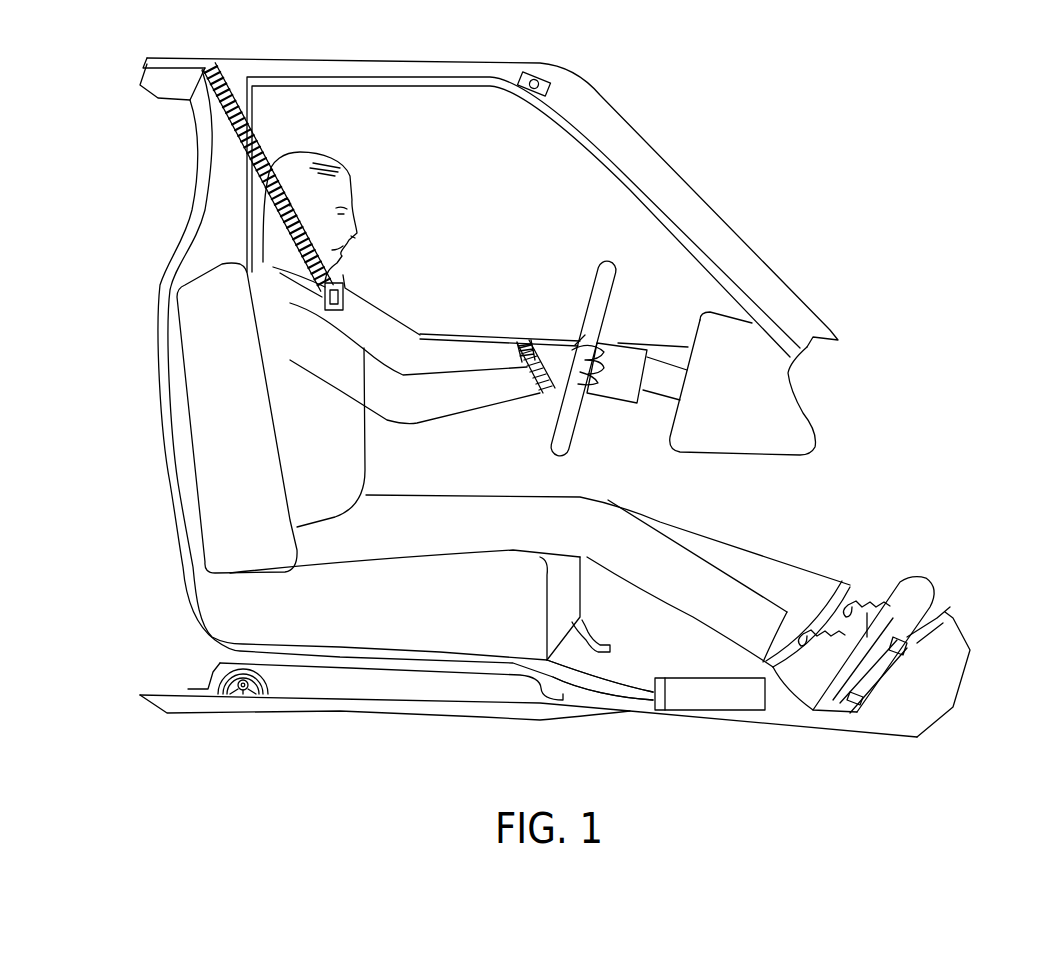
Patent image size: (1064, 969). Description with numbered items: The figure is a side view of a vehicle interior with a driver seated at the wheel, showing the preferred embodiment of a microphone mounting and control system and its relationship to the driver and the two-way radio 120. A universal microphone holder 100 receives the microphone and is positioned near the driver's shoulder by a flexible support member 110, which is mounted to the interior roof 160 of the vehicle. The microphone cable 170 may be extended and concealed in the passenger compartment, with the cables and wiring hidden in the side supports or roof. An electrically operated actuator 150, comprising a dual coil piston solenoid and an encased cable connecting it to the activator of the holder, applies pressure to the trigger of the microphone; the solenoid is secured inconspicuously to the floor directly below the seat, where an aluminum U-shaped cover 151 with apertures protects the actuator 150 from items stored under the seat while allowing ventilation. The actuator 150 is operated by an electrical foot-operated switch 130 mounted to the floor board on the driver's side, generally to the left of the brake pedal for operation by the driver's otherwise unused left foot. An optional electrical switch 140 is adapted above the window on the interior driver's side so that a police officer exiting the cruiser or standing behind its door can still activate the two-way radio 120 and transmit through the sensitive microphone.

The universal microphone holder 100 is at (345, 274).
The flexible support member 110 is at (252, 162).
The two-way radio 120 is at (740, 700).
The electrical foot-operated switch 130 is at (948, 616).
The electrical switch 140 is at (548, 73).
The electrically operated actuator 150 is at (265, 699).
The U-shaped cover 151 is at (215, 697).
The interior roof 160 is at (155, 100).
The microphone cable 170 is at (595, 697).